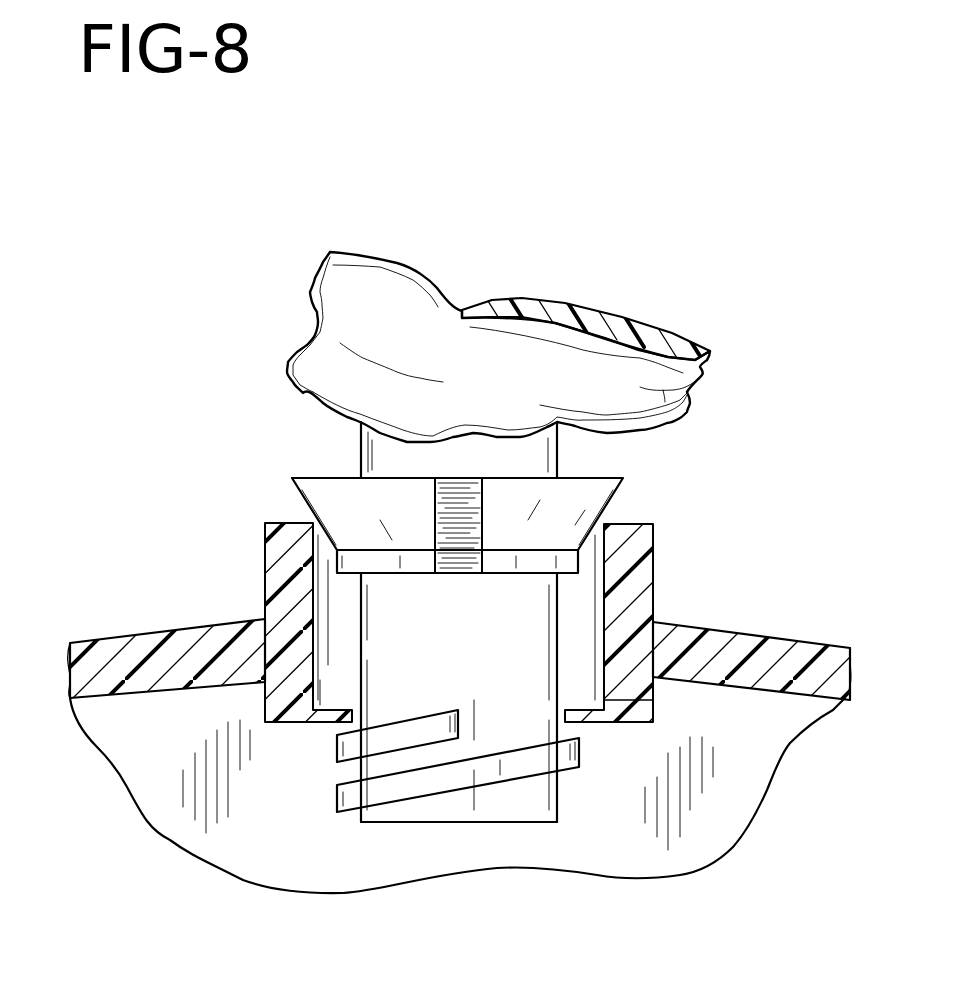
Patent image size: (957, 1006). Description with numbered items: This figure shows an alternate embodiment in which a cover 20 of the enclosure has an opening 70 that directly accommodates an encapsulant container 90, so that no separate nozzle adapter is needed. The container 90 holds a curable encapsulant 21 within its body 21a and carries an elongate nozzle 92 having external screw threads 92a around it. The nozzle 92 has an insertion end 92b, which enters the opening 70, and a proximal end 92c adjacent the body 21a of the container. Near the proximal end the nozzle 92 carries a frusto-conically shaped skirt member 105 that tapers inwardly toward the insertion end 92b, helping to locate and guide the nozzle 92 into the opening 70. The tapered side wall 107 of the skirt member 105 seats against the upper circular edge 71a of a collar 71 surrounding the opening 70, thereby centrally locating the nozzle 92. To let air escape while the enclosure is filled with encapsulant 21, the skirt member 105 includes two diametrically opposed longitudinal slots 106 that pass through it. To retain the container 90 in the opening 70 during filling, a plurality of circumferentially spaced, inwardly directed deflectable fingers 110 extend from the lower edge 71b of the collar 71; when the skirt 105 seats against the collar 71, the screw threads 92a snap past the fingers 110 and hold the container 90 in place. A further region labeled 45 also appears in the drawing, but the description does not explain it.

The cover 20 is at (802, 683).
The curable encapsulant 21 is at (584, 318).
The body of container 21a is at (357, 308).
The body 45 is at (610, 835).
The opening 70 is at (575, 600).
The collar 71 is at (265, 557).
The upper circular edge of collar 71a is at (623, 523).
The lower edge of collar 71b is at (632, 723).
The encapsulant container 90 is at (697, 390).
The elongate nozzle 92 is at (432, 673).
The external screw threads 92a is at (378, 795).
The insertion end 92b is at (493, 822).
The proximal end 92c is at (360, 470).
The frusto-conically shaped skirt member 105 is at (617, 498).
The longitudinal slots 106 is at (447, 510).
The tapered side wall 107 is at (308, 498).
The deflectable fingers 110 is at (338, 710).